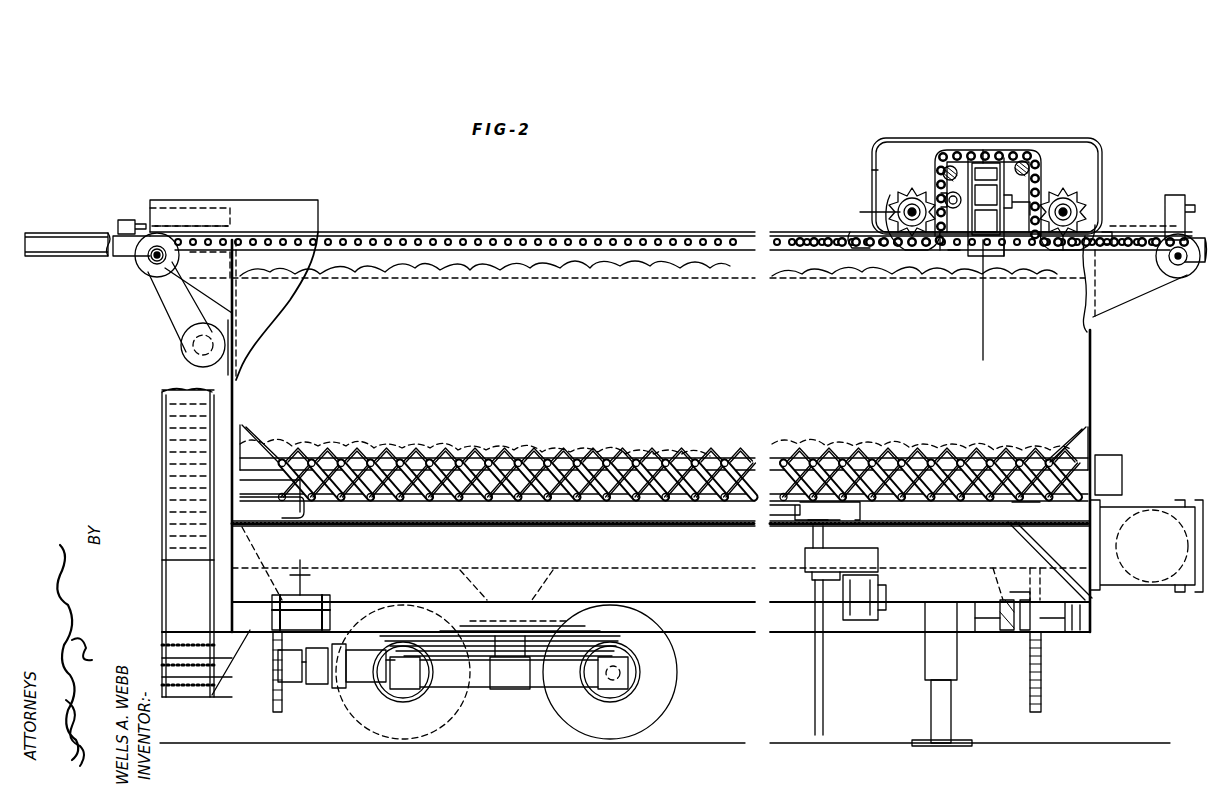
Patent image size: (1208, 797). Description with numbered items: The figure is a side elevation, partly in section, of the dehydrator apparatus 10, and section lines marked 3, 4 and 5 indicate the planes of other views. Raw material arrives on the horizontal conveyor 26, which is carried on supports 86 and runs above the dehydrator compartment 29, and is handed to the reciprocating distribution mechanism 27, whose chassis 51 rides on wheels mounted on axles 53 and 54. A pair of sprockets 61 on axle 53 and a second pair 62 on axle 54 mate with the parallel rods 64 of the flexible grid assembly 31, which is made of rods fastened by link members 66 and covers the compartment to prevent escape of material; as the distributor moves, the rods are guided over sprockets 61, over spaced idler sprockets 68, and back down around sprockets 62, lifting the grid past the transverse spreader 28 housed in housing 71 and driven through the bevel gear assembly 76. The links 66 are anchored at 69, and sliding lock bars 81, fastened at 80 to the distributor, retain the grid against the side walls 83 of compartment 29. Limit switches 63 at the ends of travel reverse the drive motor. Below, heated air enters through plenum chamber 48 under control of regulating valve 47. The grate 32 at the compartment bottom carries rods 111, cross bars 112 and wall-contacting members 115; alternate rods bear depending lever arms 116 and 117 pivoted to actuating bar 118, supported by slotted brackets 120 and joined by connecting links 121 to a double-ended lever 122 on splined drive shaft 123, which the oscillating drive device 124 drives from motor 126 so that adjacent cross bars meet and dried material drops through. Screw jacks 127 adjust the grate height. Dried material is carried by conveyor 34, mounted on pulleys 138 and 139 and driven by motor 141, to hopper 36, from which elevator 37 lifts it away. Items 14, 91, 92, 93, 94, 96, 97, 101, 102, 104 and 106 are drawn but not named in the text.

The dehydrator apparatus 10 is at (492, 214).
The hydraulic cylinder 14 is at (1000, 182).
The horizontal conveyor 26 is at (148, 276).
The reciprocating distribution mechanism 27 is at (922, 132).
The transverse spreader 28 is at (1006, 214).
The dehydrator compartment 29 is at (658, 291).
The grid assembly 31 is at (546, 233).
The grate 32 is at (596, 456).
The conveyor 34 is at (1094, 614).
The hopper 36 is at (230, 644).
The elevator 37 is at (162, 438).
The regulating valve 47 is at (1172, 498).
The plenum chamber 48 is at (1031, 563).
The chassis 51 is at (944, 244).
The axle 53 is at (876, 210).
The axle 54 is at (1066, 240).
The sprockets 61 is at (906, 200).
The sprockets 62 is at (1070, 196).
The limit switches 63 is at (128, 219).
The parallel rods 64 is at (430, 236).
The link members 66 is at (668, 236).
The idler sprockets 68 is at (944, 170).
The anchor 69 is at (190, 226).
The housing 71 is at (983, 150).
The bevel gear assembly 76 is at (953, 208).
The fastening 80 is at (852, 246).
The sliding lock bar 81 is at (742, 232).
The side walls 83 is at (274, 300).
The supports 86 is at (86, 232).
The drive pulley 91 is at (138, 260).
The end pipe 92 is at (1196, 290).
The support plate 93 is at (688, 285).
The motor pulley 94 is at (186, 354).
The drive belt 96 is at (170, 302).
The cover plate 97 is at (272, 204).
The cylinder support 101 is at (970, 250).
The cylinder support 102 is at (1004, 248).
The piston rod 104 is at (985, 280).
The housing wall 106 is at (870, 165).
The rods 111 is at (408, 462).
The cross bars 112 is at (502, 456).
The members 115 is at (248, 428).
The lever arm 116 is at (518, 498).
The lever arm 117 is at (550, 498).
The actuating bar 118 is at (458, 500).
The slotted bracket 120 is at (296, 516).
The connecting links 121 is at (780, 518).
The double-ended lever 122 is at (836, 524).
The splined drive shaft 123 is at (814, 642).
The oscillating drive device 124 is at (878, 556).
The motor 126 is at (858, 622).
The screw jack 127 is at (272, 688).
The pulley 138 is at (998, 630).
The pulley 139 is at (340, 602).
The motor 141 is at (342, 684).
The section line 3- 3 is at (355, 360).
The section line 4- 4 is at (880, 213).
The section line 5- 5 is at (340, 508).